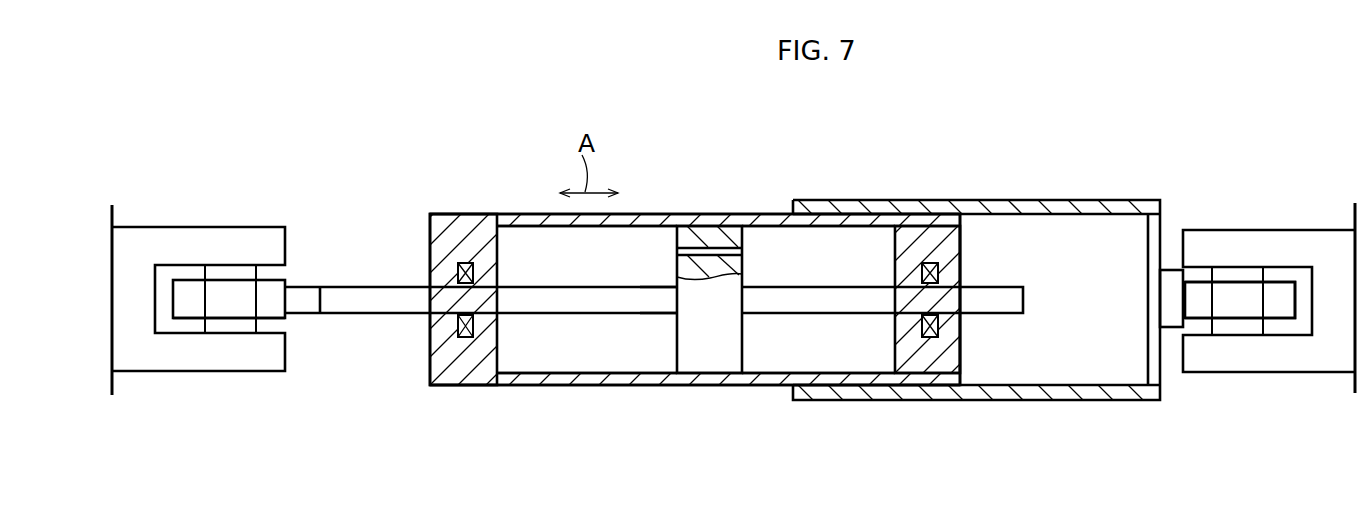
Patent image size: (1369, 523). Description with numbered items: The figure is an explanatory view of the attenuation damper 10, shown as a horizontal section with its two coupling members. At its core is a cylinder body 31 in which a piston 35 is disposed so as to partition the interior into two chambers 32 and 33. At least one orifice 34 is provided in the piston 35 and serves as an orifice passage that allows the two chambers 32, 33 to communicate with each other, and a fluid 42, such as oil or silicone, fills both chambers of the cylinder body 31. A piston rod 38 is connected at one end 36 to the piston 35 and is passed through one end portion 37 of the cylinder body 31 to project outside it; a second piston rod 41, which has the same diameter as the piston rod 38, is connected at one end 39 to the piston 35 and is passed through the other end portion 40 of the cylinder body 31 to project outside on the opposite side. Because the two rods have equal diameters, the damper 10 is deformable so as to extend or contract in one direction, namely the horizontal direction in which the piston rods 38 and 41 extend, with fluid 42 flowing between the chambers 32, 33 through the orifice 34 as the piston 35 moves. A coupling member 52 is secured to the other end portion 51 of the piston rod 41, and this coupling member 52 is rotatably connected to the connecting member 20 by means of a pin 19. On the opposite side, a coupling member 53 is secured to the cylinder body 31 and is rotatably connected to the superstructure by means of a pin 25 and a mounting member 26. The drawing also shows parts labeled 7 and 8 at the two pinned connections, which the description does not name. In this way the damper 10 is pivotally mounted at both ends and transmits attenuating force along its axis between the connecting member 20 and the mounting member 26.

The engagement block 7 is at (1227, 295).
The engagement member 8 is at (240, 300).
The attenuation damper 10 is at (510, 393).
The pin 19 is at (218, 272).
The connecting member 20 is at (128, 243).
The pin 25 is at (1250, 275).
The mounting member 26 is at (1315, 360).
The cylinder body 31 is at (762, 222).
The chamber 32 is at (616, 350).
The chamber 33 is at (828, 365).
The orifice 34 is at (712, 250).
The piston 35 is at (708, 352).
The one end of piston rod 36 is at (756, 302).
The one end portion of cylinder body 37 is at (930, 365).
The piston rod 38 is at (868, 300).
The one end of piston rod 39 is at (668, 295).
The other end portion of cylinder body 40 is at (465, 225).
The piston rod 41 is at (383, 302).
The fluid 42 is at (573, 340).
The other end portion of piston rod 51 is at (335, 303).
The coupling member 52 is at (187, 312).
The coupling member 53 is at (1010, 210).